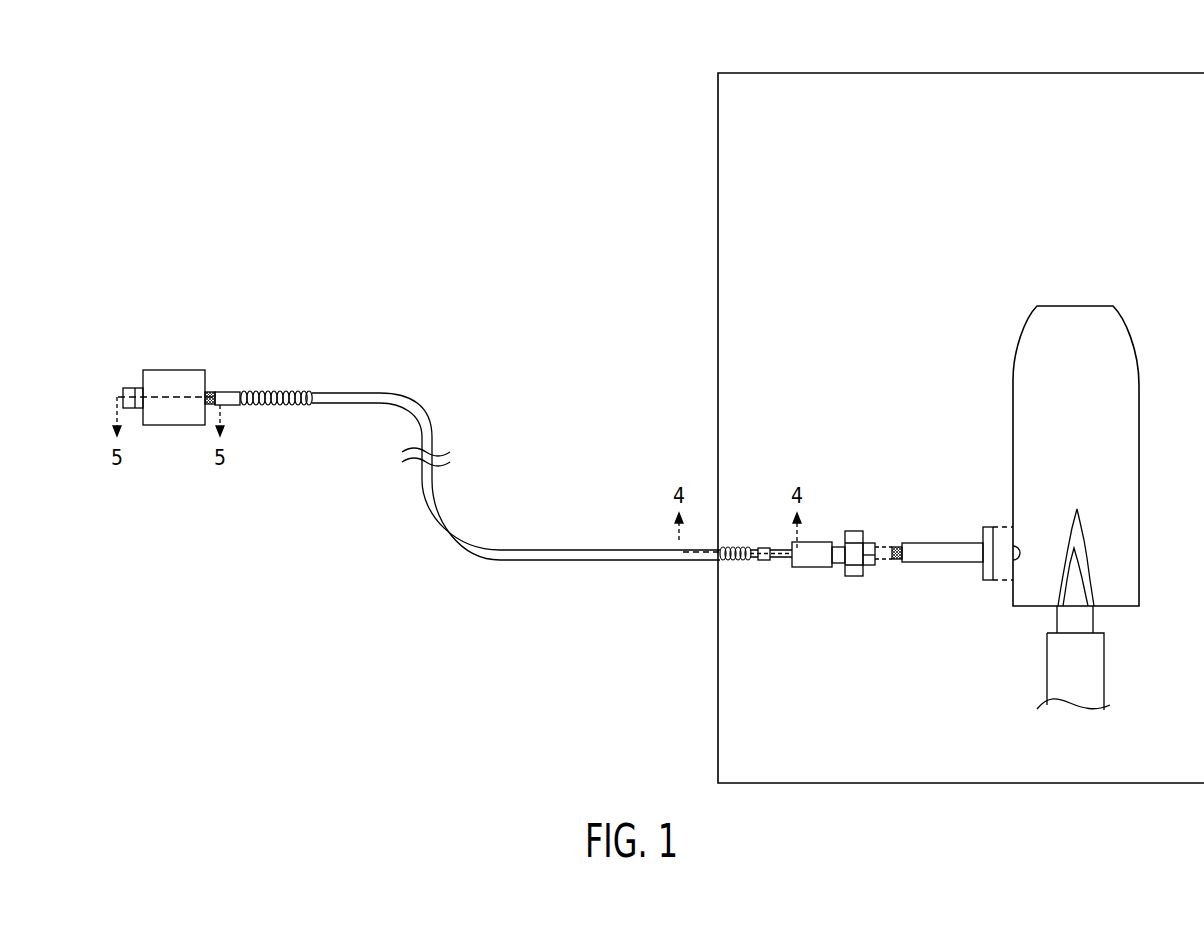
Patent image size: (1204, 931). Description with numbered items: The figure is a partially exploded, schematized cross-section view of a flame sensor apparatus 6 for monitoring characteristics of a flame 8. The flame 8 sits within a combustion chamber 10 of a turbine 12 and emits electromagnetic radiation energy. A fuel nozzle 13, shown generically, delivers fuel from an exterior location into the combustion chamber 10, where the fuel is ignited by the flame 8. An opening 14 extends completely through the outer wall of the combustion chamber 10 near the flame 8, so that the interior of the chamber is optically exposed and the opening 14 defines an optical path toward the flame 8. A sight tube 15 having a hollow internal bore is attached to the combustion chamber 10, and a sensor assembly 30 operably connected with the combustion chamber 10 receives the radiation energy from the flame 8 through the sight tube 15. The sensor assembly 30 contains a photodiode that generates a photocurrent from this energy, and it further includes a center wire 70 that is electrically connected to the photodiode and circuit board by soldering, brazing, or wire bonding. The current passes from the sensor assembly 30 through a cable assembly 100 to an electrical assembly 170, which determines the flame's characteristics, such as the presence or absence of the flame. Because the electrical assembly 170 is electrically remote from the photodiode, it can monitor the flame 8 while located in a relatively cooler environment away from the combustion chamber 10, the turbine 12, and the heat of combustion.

The flame sensor apparatus 6 is at (296, 631).
The flame 8 is at (1090, 562).
The combustion chamber 10 is at (1013, 440).
The turbine 12 is at (717, 665).
The fuel nozzle 13 is at (1105, 675).
The opening 14 is at (1020, 547).
The sight tube 15 is at (935, 563).
The sensor assembly 30 is at (812, 568).
The center wire 70 is at (757, 563).
The cable assembly 100 is at (434, 517).
The electrical assembly 170 is at (160, 370).